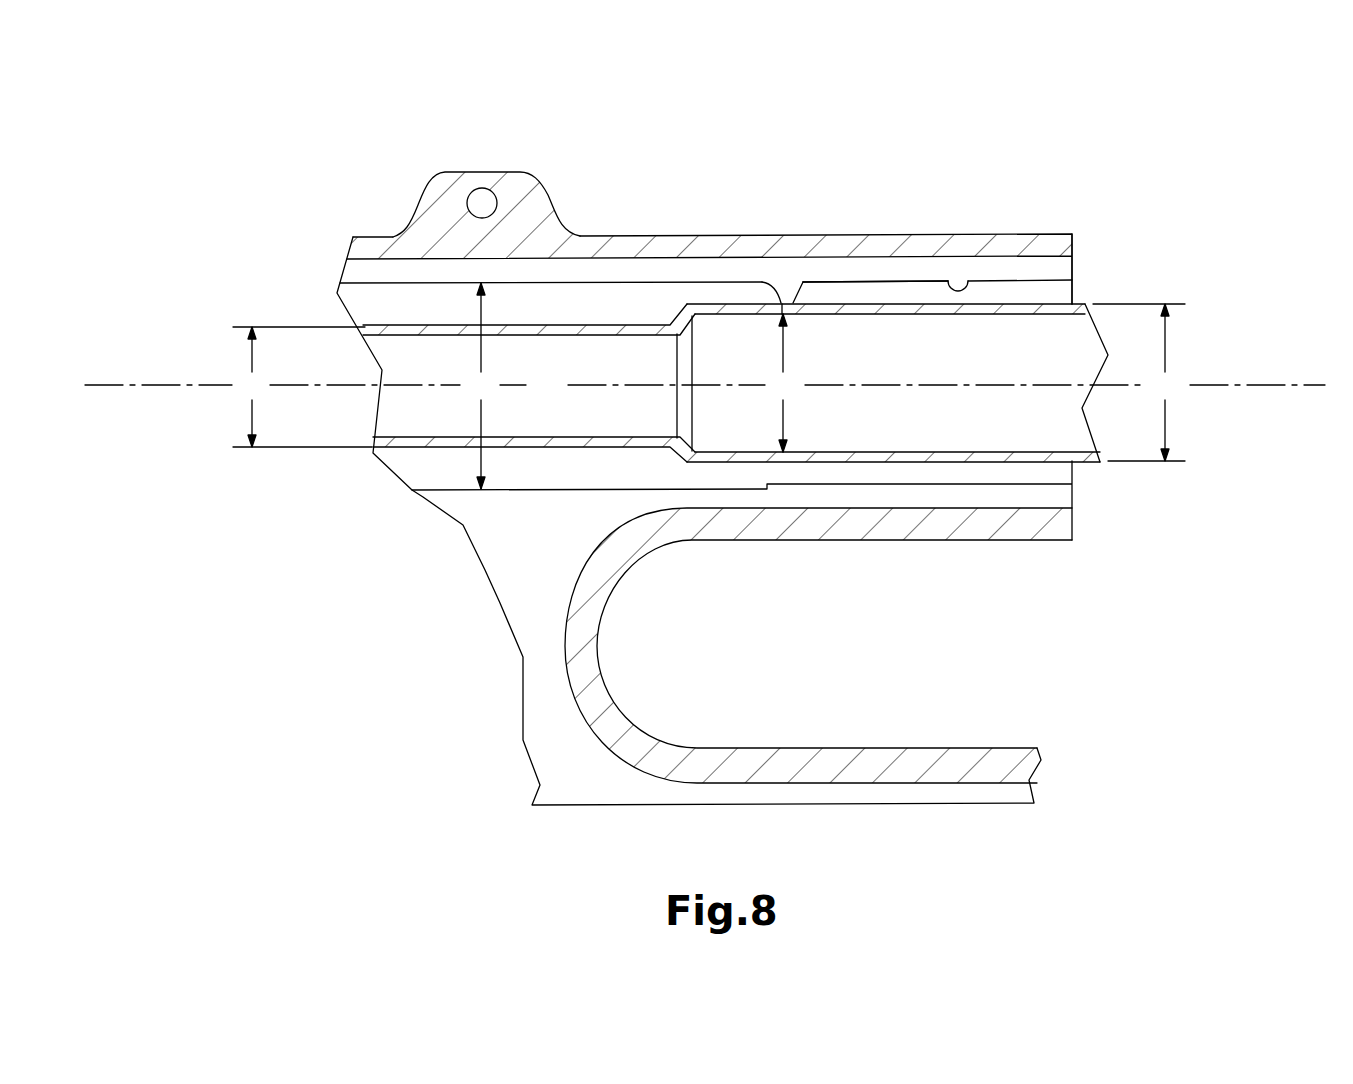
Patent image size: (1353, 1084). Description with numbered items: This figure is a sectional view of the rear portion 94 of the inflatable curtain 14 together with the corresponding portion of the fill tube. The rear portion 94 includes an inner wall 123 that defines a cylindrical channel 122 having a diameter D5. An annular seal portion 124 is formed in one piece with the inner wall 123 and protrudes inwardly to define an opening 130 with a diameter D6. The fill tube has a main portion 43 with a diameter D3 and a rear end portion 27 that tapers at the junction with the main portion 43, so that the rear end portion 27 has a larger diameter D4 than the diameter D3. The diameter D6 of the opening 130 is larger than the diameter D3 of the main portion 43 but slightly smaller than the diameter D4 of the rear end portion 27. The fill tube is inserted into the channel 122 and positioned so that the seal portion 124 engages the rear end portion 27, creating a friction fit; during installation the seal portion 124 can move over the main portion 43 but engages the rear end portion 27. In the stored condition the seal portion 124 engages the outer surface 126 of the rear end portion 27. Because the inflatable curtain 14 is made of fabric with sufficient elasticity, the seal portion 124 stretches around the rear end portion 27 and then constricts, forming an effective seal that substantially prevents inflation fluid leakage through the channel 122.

The inflatable curtain 14 is at (497, 181).
The rear portion 94 is at (741, 234).
The seal portion 124 is at (782, 304).
The inner wall 123 is at (968, 284).
The cylindrical channel 122 is at (1048, 292).
The opening 130 is at (772, 303).
The main portion 43 is at (557, 437).
The rear end portion 27 is at (1075, 463).
The outer surface 126 is at (965, 465).
The diameter of the main portion D3 is at (302, 387).
The diameter of the rear end portion D4 is at (1139, 382).
The diameter of the cylindrical channel D5 is at (480, 386).
The diameter of the opening D6 is at (785, 383).